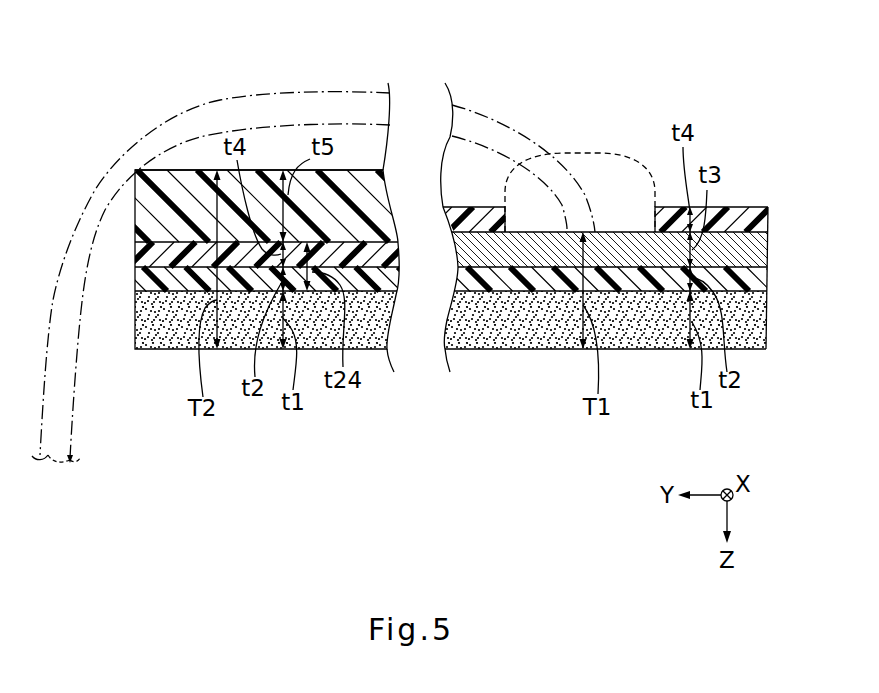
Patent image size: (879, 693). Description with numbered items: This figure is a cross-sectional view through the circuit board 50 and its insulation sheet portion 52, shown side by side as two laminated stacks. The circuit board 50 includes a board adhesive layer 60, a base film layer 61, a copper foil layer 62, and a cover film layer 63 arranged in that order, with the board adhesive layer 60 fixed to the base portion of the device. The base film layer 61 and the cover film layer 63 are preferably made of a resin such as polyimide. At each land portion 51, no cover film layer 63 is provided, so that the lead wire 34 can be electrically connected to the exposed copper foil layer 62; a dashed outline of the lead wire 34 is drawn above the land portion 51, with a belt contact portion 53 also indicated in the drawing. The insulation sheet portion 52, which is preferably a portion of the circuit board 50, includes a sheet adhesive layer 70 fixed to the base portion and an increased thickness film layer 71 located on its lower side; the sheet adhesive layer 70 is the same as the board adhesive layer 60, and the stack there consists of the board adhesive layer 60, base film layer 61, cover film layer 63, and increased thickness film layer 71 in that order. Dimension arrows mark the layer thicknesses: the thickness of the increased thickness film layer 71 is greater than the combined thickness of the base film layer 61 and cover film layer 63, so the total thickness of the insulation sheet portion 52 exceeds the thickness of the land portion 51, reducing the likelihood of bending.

The lead wire 34 is at (315, 92).
The circuit board 50 is at (727, 207).
The land portion 51 is at (608, 222).
The insulation sheet portion 52 is at (275, 158).
The belt contact portion 53 is at (596, 150).
The board adhesive layer 60 is at (760, 321).
The base film layer 61 is at (143, 278).
The copper foil layer 62 is at (760, 242).
The cover film layer 63 is at (152, 257).
The sheet adhesive layer 70 is at (147, 325).
The increased thickness film layer 71 is at (147, 213).